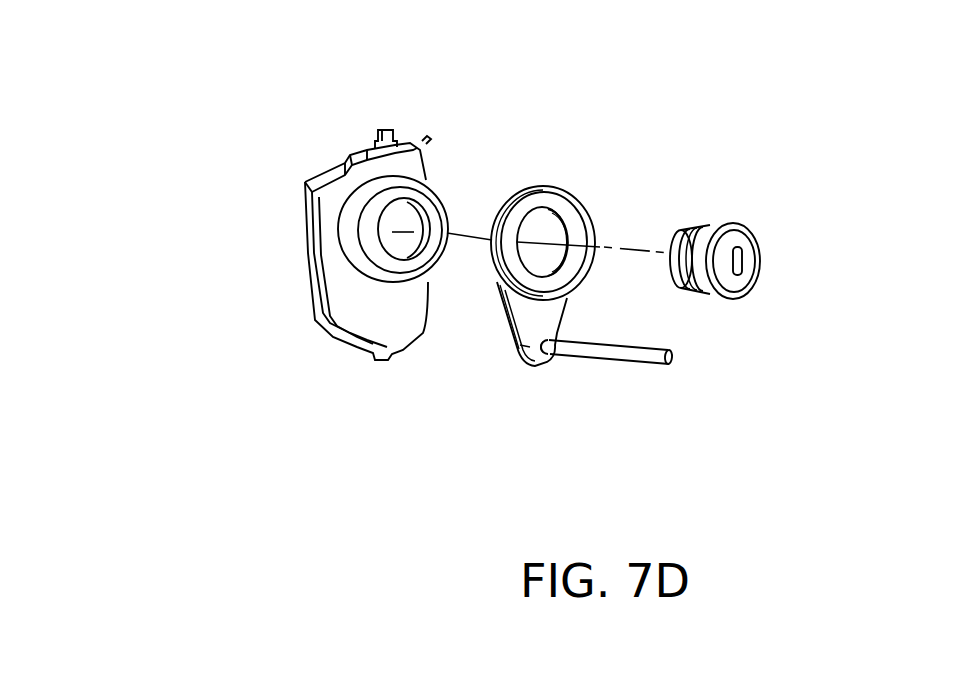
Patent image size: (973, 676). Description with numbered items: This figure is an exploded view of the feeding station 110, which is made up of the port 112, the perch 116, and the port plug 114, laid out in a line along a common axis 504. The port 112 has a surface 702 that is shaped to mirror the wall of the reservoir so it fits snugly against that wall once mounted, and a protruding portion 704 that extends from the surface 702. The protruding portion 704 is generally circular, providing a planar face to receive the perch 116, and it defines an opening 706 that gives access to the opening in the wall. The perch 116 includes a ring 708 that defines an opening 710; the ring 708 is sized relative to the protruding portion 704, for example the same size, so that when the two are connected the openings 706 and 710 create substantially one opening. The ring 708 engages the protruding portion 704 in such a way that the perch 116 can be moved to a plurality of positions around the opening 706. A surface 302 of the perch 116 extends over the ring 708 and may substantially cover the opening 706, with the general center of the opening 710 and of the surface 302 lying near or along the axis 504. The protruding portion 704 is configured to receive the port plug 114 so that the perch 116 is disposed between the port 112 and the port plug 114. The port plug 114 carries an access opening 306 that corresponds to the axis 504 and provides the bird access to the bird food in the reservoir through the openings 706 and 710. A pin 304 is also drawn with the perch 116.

The feeding station 110 is at (169, 104).
The port 112 is at (412, 102).
The port plug 114 is at (807, 214).
The perch 116 is at (638, 410).
The surface 302 is at (512, 320).
The pin 304 is at (623, 345).
The access opening 306 is at (742, 258).
The axis 504 is at (645, 245).
The surface 702 is at (367, 348).
The protruding portion 704 is at (348, 226).
The opening 706 is at (414, 209).
The ring 708 is at (543, 188).
The opening 710 is at (560, 221).